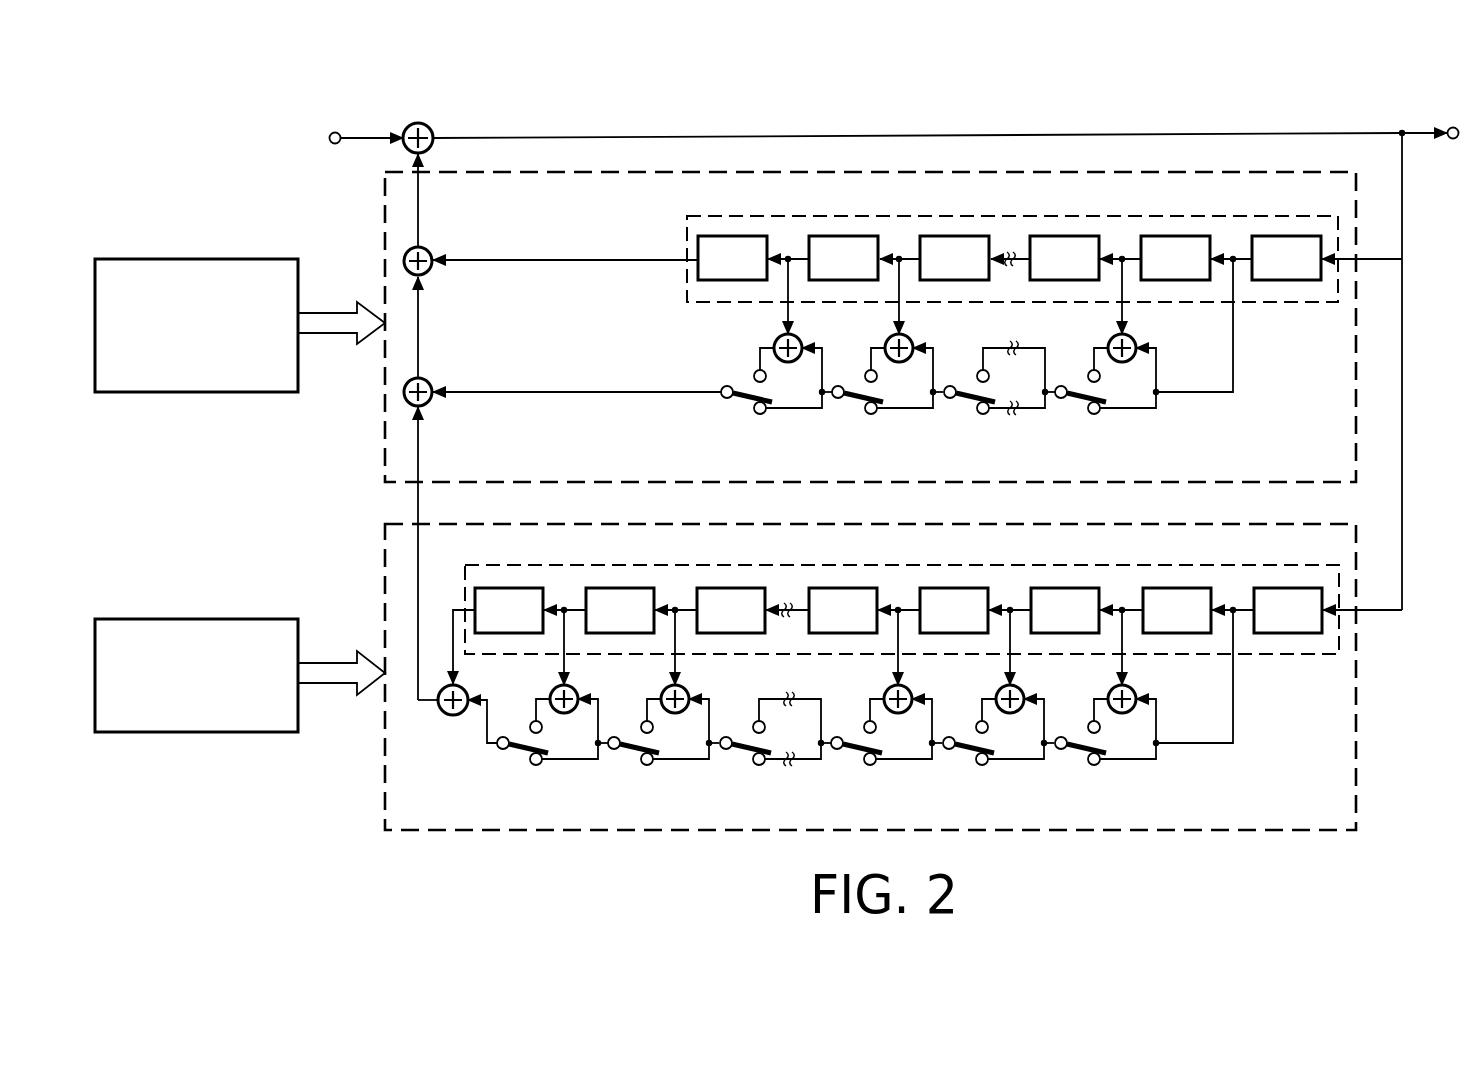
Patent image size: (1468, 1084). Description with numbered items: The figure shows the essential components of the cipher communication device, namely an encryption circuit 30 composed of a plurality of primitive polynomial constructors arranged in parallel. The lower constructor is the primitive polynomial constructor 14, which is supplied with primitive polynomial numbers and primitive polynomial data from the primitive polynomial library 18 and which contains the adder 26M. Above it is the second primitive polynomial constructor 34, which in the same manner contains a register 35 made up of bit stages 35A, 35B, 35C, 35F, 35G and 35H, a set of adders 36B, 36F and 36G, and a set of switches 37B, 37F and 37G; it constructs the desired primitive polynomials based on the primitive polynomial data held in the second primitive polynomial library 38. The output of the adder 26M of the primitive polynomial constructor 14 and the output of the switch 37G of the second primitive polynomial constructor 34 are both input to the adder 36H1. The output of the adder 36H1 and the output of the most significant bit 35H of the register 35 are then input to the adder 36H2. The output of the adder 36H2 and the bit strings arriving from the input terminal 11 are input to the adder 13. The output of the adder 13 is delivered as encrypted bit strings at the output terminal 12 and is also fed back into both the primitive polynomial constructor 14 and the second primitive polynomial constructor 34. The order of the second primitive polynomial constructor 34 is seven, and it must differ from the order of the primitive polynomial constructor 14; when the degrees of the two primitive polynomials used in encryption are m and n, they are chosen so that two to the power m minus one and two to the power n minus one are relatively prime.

The input terminal 11 is at (335, 144).
The output terminal 12 is at (1453, 139).
The adder 13 is at (423, 125).
The primitive polynomial constructor 14 is at (1357, 770).
The primitive polynomial library 18 is at (252, 619).
The adder 26M is at (446, 716).
The encryption circuit 30 is at (658, 906).
The second primitive polynomial constructor 34 is at (1357, 425).
The register 35 is at (1294, 303).
The register bit 35A is at (1286, 258).
The register bit 35B is at (1175, 258).
The register bit 35C is at (1064, 258).
The register bit 35F is at (954, 258).
The register bit 35G is at (843, 258).
The most significant bit 35H is at (732, 258).
The adder 36B is at (1134, 342).
The adder 36F is at (911, 342).
The adder 36G is at (800, 342).
The adder 36H1 is at (430, 382).
The adder 36H2 is at (430, 252).
The switch 37B is at (1080, 398).
The switch 37F is at (857, 398).
The switch 37G is at (745, 398).
The second primitive polynomial library 38 is at (252, 259).